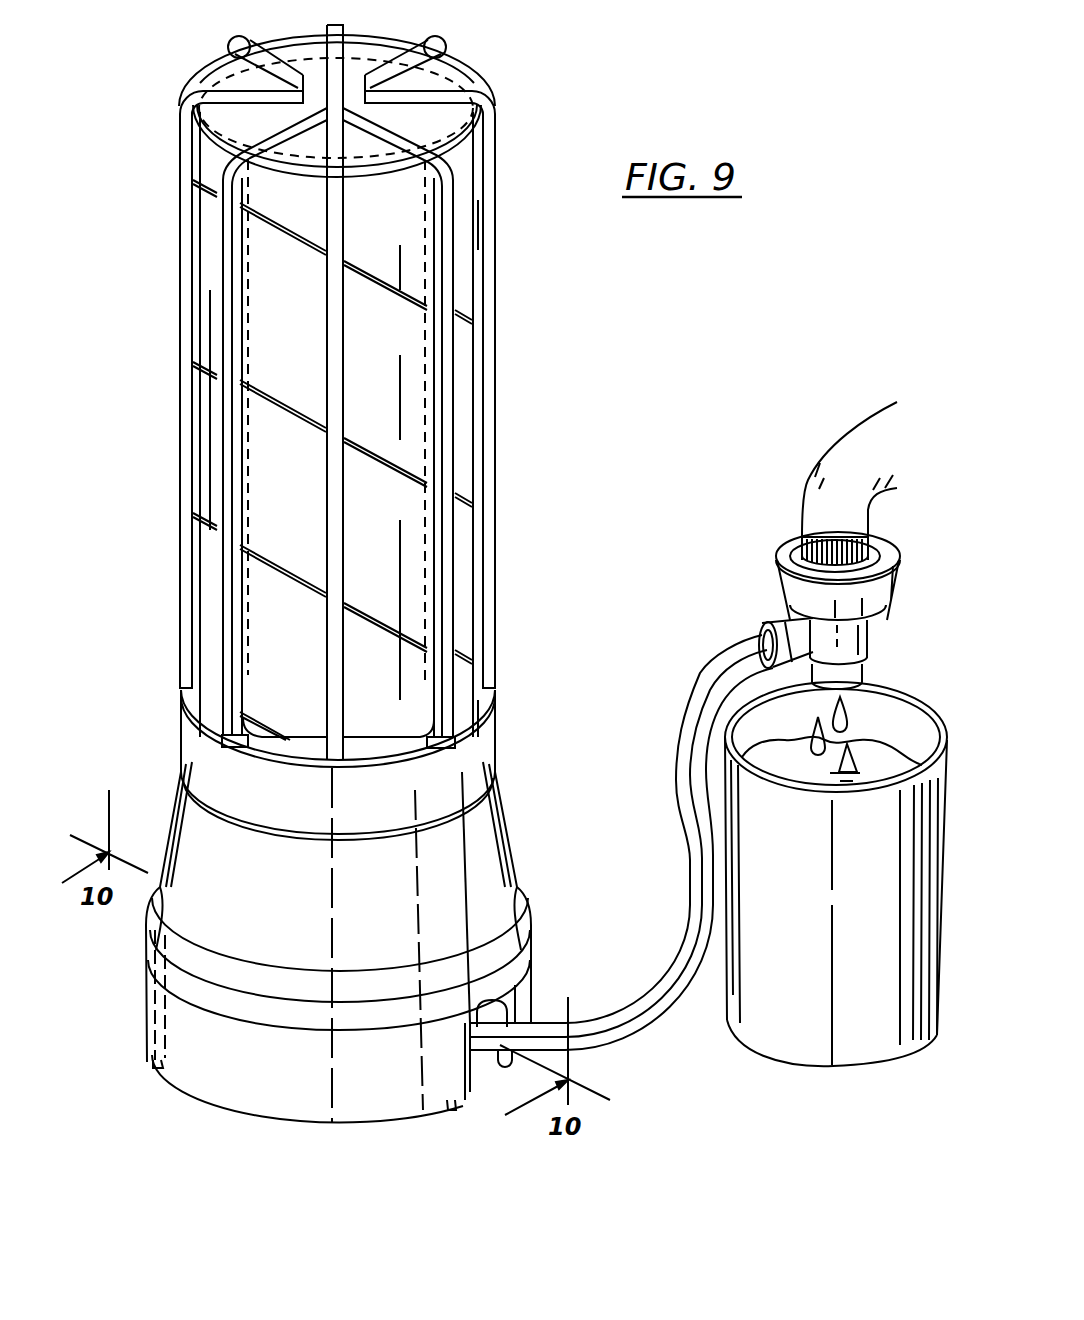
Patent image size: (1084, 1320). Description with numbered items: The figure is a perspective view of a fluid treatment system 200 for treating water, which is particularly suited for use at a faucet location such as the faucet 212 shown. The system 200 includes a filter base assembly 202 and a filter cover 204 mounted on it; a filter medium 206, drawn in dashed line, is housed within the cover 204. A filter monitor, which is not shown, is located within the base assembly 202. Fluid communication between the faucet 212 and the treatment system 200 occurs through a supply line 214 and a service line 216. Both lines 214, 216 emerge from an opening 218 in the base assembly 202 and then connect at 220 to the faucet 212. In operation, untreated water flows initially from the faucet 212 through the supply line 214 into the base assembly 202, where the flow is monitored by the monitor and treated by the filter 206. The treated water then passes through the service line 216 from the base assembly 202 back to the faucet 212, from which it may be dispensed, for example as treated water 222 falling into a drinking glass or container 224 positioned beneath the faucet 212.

The system for treating water 200 is at (684, 347).
The filter base assembly 202 is at (203, 895).
The filter cover 204 is at (187, 428).
The filter medium 206 is at (247, 275).
The faucet 212 is at (784, 551).
The supply line 214 is at (678, 792).
The service line 216 is at (704, 907).
The opening 218 is at (483, 1067).
The connection to faucet 220 is at (783, 622).
The treated water 222 is at (852, 706).
The drinking glass or container 224 is at (805, 1020).